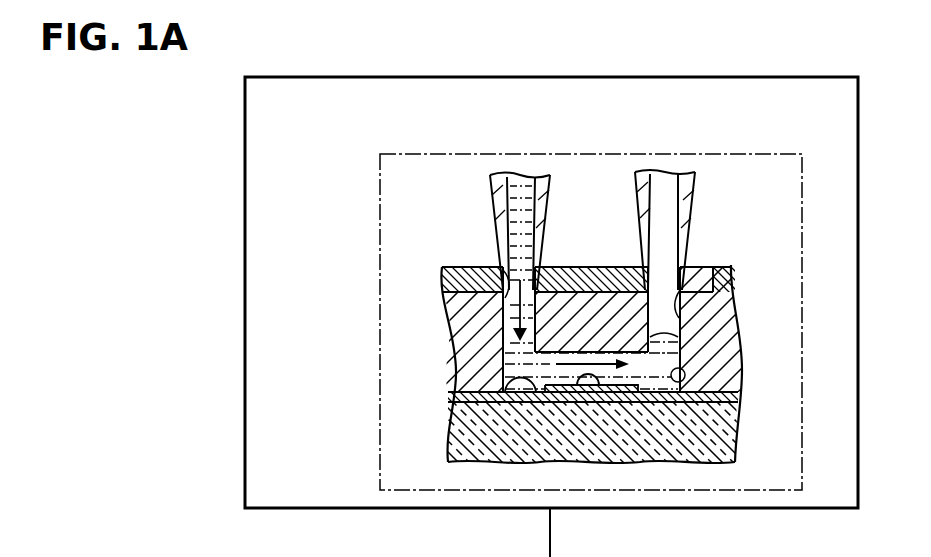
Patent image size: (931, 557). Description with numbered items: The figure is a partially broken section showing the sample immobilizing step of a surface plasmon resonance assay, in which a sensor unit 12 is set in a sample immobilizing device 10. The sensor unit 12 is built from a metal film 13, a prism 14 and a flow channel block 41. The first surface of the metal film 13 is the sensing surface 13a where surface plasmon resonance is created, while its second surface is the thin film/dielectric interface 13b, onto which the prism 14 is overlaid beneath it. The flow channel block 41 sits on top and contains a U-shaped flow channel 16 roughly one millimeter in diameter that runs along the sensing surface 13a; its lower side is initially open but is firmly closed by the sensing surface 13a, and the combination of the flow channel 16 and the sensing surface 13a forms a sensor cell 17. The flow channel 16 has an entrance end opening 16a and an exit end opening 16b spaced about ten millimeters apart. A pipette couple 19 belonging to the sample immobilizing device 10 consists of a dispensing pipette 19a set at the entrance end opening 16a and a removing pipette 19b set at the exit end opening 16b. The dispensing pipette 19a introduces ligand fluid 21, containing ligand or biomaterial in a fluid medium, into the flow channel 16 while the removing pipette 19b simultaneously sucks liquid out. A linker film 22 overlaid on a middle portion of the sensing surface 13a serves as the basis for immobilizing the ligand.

The sample immobilizing device 10 is at (380, 300).
The sensor unit 12 is at (765, 240).
The metal film 13 is at (745, 397).
The sensing surface 13a is at (508, 380).
The thin film/dielectric interface 13b is at (563, 402).
The prism 14 is at (730, 464).
The flow channel 16 is at (744, 361).
The entrance end opening 16a is at (504, 278).
The exit end opening 16b is at (689, 274).
The sensor cell 17 is at (745, 341).
The pipette couple 19 is at (540, 200).
The dispensing pipette 19a is at (550, 220).
The removing pipette 19b is at (640, 226).
The ligand fluid 21 is at (505, 356).
The linker film 22 is at (605, 396).
The flow channel block 41 is at (733, 300).